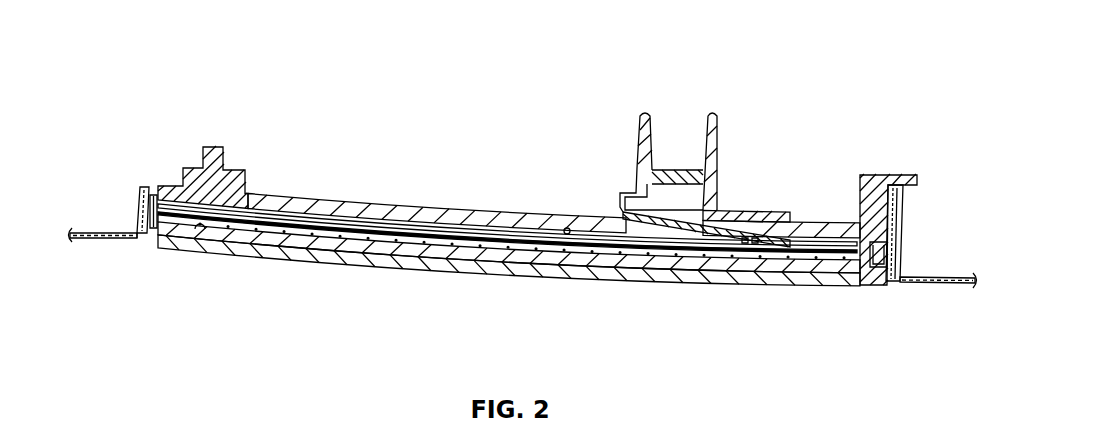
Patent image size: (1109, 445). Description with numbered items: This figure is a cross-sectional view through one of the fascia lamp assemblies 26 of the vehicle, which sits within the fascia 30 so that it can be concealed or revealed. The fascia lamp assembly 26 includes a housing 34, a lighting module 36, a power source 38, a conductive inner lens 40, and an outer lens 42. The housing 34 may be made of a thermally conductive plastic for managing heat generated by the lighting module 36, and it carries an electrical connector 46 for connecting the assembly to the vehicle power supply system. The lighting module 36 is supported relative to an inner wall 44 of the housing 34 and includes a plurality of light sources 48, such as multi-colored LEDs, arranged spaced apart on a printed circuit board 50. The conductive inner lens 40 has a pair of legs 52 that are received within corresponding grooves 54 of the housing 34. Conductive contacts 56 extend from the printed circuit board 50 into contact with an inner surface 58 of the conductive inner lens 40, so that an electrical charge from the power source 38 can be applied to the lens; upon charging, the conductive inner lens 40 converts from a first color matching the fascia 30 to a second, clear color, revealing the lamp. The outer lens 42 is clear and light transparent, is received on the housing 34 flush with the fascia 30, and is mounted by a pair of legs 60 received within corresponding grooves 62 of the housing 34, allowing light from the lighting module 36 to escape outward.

The fascia lamp assembly 26 is at (255, 126).
The fascia 30 is at (104, 241).
The housing 34 is at (497, 214).
The lighting module 36 is at (524, 233).
The power source 38 is at (723, 218).
The conductive inner lens 40 is at (511, 262).
The outer lens 42 is at (363, 274).
The inner wall 44 is at (569, 228).
The electrical connector 46 is at (711, 114).
The light sources 48 is at (245, 230).
The printed circuit board 50 is at (605, 208).
The legs 52 is at (138, 208).
The grooves 54 is at (150, 205).
The conductive contacts 56 is at (170, 220).
The inner surface 58 is at (200, 232).
The legs 60 is at (136, 222).
The grooves 62 is at (137, 207).